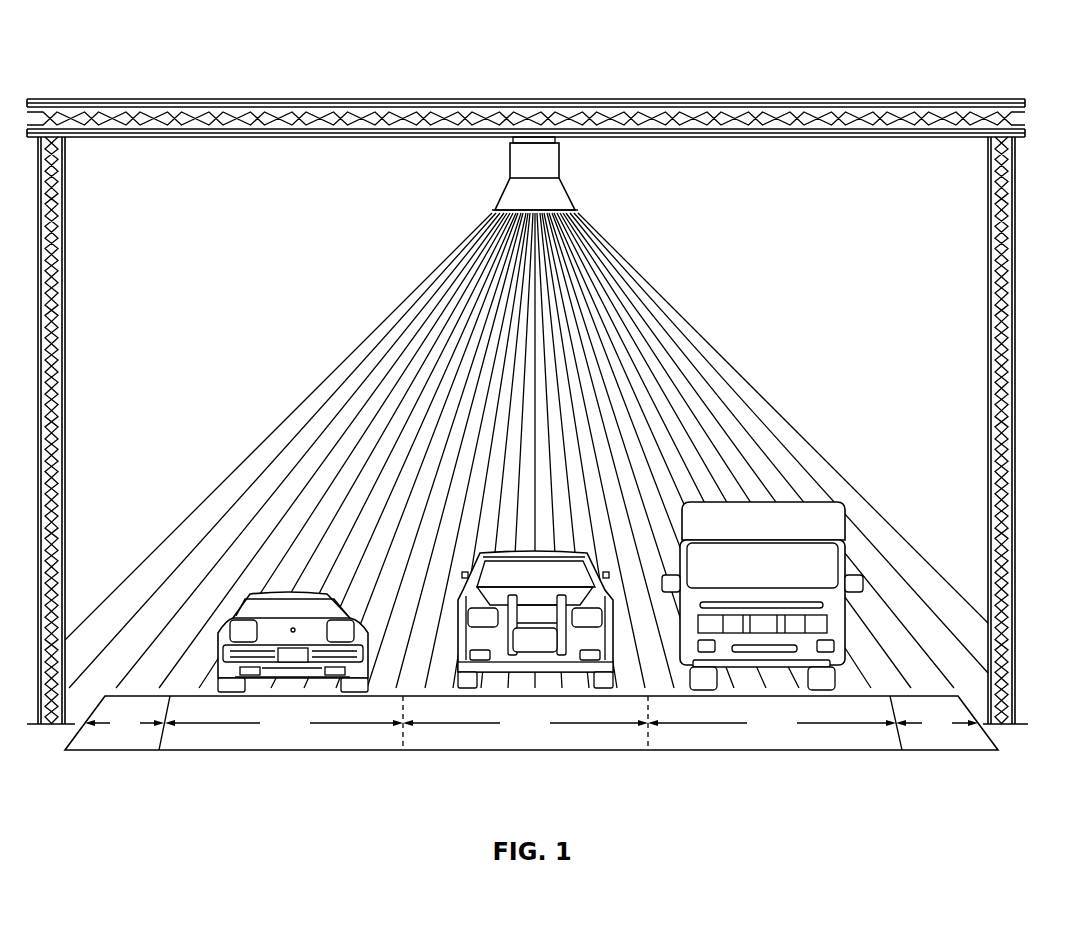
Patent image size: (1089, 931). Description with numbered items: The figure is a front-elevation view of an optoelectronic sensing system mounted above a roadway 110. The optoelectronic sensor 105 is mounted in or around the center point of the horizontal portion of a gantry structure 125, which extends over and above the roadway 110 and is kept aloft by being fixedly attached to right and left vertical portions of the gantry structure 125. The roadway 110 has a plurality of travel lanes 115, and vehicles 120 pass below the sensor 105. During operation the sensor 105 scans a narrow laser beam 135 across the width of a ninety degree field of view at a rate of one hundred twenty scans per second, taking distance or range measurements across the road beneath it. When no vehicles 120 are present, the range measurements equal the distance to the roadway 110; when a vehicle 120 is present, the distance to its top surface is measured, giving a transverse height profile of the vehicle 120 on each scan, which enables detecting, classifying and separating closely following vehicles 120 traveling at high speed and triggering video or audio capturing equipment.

The optoelectronic sensor 105 is at (544, 152).
The roadway 110 is at (922, 630).
The travel lanes 115 is at (127, 763).
The vehicles 120 is at (460, 559).
The gantry structure 125 is at (166, 92).
The laser beam 135 is at (650, 305).